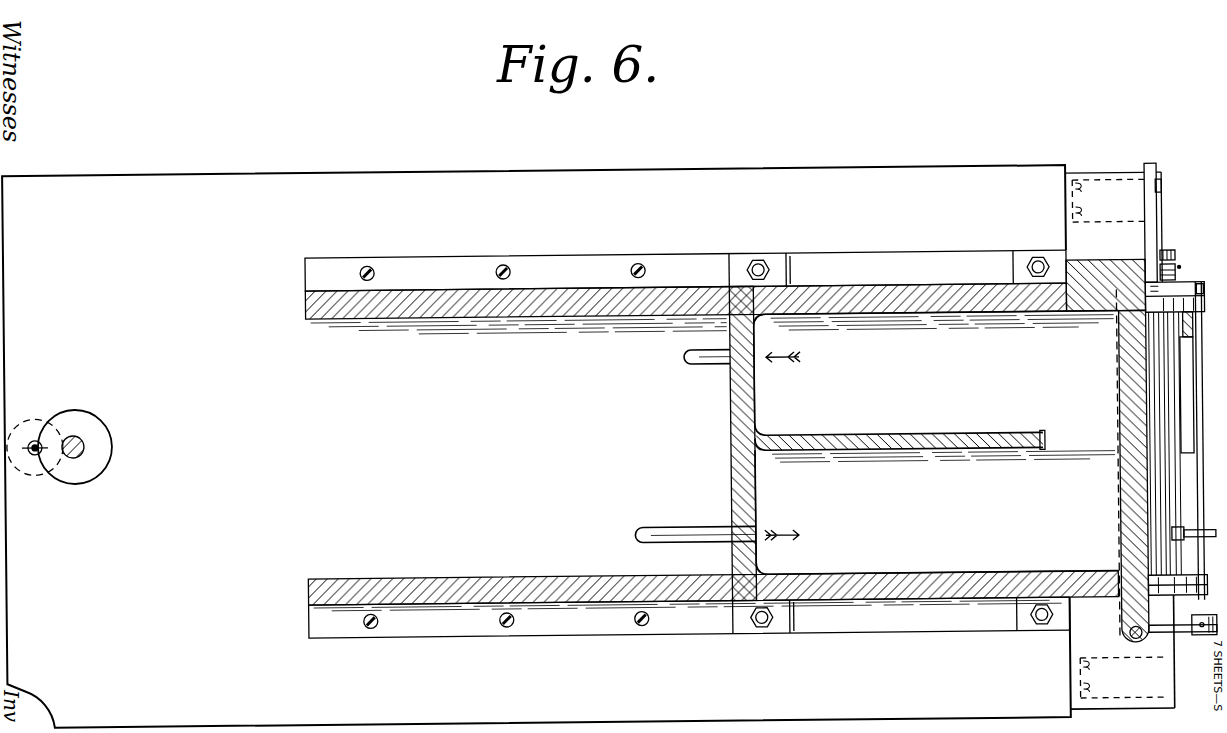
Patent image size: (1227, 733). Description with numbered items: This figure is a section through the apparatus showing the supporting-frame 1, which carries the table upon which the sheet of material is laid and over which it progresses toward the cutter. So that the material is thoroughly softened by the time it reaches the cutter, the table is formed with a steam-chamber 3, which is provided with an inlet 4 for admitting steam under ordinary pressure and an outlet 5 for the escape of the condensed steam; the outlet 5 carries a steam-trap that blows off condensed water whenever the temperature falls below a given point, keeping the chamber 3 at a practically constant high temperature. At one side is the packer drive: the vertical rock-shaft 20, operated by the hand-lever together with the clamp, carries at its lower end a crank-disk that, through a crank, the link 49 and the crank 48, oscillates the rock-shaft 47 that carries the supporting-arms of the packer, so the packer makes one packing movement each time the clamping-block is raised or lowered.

The supporting-frame 1 is at (536, 446).
The steam-chamber 3 is at (938, 409).
The inlet 4 is at (688, 527).
The outlet 5 is at (716, 364).
The vertical rock-shaft 20 is at (1131, 648).
The rock-shaft 47 is at (1196, 511).
The crank 48 is at (1206, 641).
The link 49 is at (1174, 642).